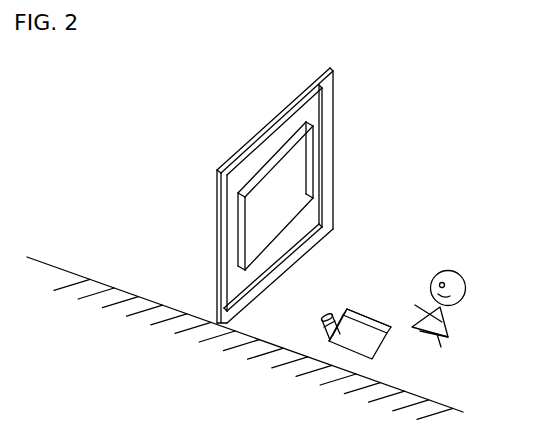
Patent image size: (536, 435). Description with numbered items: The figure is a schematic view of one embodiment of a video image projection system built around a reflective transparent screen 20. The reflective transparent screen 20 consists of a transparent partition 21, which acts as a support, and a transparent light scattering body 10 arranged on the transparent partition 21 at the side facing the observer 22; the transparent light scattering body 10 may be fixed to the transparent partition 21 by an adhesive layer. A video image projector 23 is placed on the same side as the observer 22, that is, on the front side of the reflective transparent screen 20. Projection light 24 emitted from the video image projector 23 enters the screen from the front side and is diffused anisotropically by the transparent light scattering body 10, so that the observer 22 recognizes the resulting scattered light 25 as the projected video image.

The transparent light scattering body 10 is at (305, 190).
The reflective transparent screen 20 is at (327, 195).
The transparent partition 21 is at (305, 103).
The observer 22 is at (453, 313).
The video image projector 23 is at (384, 343).
The projection light 24 is at (284, 232).
The scattered light 25 is at (283, 211).